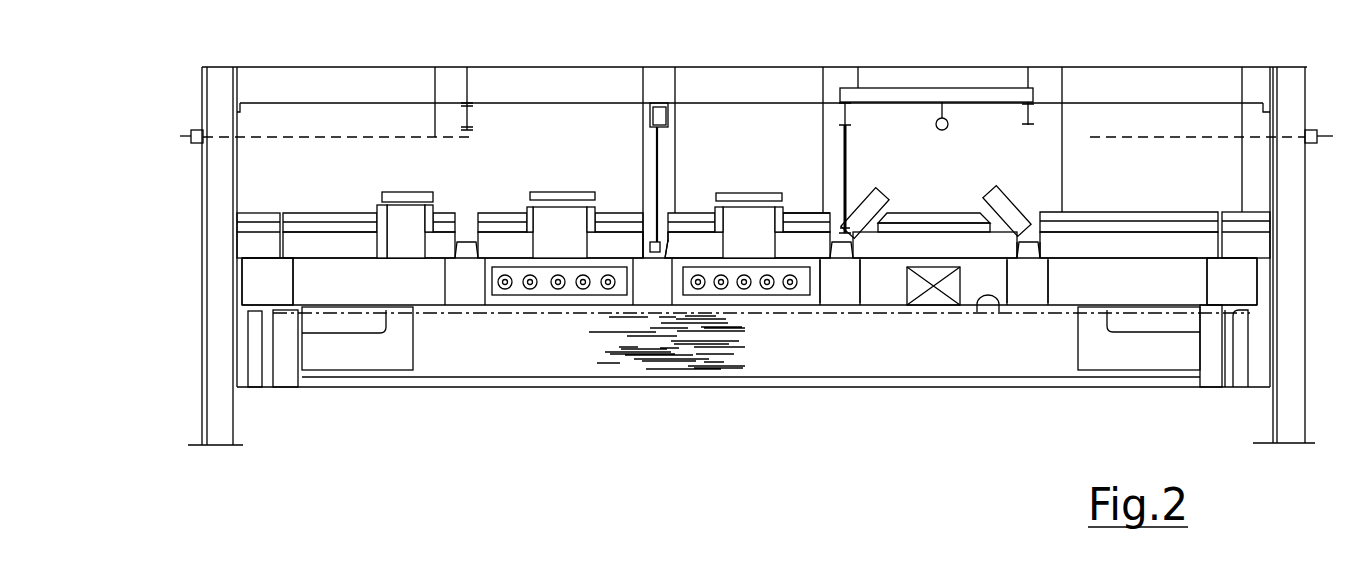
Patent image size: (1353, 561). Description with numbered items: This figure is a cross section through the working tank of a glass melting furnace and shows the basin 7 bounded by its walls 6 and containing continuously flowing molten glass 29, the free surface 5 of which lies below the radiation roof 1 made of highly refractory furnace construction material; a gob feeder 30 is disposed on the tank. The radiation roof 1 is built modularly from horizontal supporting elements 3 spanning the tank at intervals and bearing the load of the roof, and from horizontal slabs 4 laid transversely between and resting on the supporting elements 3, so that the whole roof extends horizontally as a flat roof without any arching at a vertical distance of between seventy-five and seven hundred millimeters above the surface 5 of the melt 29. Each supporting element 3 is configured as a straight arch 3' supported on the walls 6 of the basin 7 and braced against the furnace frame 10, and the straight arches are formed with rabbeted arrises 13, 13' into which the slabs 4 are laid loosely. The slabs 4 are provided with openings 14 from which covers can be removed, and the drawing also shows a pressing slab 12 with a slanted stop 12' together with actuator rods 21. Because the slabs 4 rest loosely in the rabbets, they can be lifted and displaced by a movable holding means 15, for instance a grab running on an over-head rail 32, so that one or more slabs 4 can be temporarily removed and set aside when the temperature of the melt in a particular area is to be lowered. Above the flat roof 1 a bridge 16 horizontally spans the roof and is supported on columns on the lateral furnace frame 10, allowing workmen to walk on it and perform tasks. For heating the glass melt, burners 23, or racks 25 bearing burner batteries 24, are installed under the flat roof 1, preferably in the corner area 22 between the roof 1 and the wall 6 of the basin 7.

The radiation roof 1 is at (799, 200).
The supporting element 3 is at (749, 281).
The straight arch 3' is at (934, 281).
The slab 4 is at (750, 235).
The surface 5 is at (992, 312).
The wall 6 is at (233, 297).
The basin 7 is at (761, 345).
The furnace frame 10 is at (215, 100).
The pressing slab 12 is at (917, 212).
The slanted stop 12' is at (685, 216).
The rabbeted arris 13 is at (813, 215).
The rabbeted arris 13' is at (890, 203).
The opening 14 is at (402, 222).
The movable holding means 15 is at (860, 210).
The bridge 16 is at (735, 101).
The actuator rods 21 is at (661, 166).
The corner area 22 is at (298, 280).
The burner 23 is at (262, 277).
The burner battery 24 is at (608, 290).
The rack 25 is at (508, 297).
The molten glass 29 is at (667, 342).
The gob feeder 30 is at (312, 327).
The over-head rail 32 is at (936, 110).